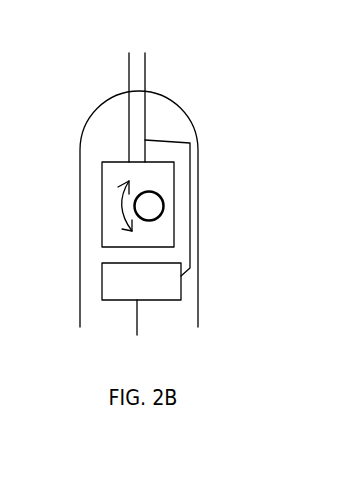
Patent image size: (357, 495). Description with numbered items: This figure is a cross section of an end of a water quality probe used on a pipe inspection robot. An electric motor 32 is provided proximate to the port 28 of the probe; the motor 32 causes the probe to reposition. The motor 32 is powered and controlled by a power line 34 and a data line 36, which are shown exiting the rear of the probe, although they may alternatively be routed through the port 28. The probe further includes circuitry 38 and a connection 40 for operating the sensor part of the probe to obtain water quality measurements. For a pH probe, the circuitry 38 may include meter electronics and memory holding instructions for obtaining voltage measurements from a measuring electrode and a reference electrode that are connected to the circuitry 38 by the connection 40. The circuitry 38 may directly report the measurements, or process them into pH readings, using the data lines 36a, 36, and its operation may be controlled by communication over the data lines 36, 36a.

The port 28 is at (157, 203).
The electric motor 32 is at (108, 202).
The power line 34 is at (127, 78).
The data line 36 is at (147, 78).
The data line 36a is at (189, 227).
The circuitry 38 is at (106, 271).
The connection 40 is at (137, 323).